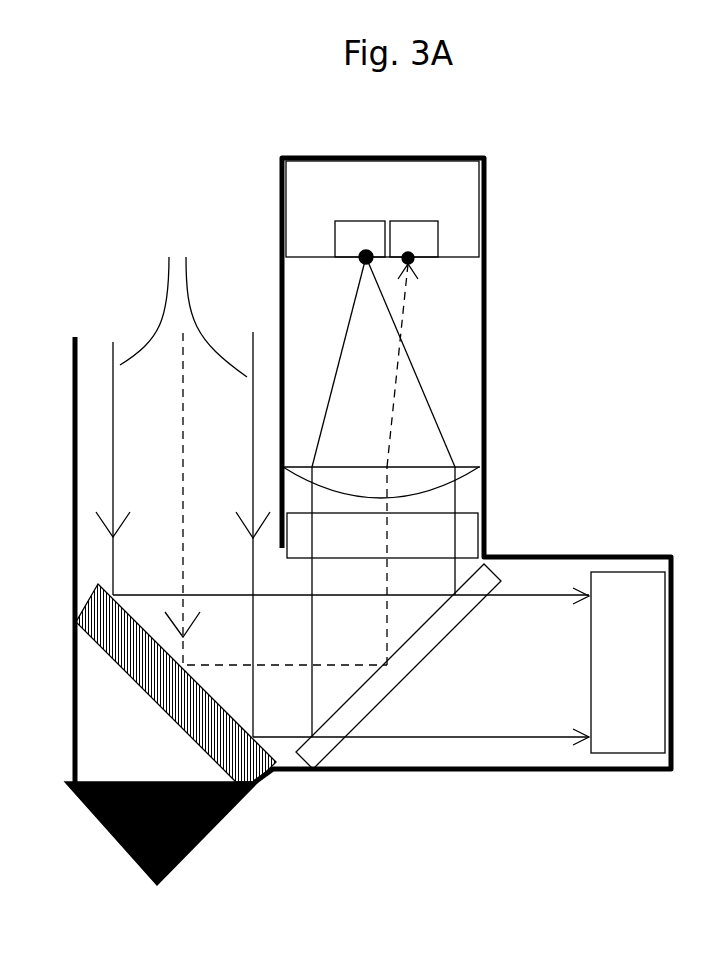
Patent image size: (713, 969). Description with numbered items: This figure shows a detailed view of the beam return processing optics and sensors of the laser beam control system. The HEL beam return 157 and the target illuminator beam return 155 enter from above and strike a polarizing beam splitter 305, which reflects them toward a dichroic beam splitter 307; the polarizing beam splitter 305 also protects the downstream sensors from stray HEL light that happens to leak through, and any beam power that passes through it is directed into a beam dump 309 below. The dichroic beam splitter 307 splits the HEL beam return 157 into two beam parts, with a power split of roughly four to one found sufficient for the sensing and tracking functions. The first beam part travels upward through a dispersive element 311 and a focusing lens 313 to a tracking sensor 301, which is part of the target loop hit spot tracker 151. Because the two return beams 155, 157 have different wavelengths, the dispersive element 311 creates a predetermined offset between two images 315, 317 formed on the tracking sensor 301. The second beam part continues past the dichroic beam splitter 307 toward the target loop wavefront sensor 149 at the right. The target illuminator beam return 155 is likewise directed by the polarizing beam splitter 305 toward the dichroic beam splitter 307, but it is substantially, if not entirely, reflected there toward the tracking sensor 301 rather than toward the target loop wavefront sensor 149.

The target loop wavefront sensor 149 is at (642, 730).
The target loop hit spot tracker 151 is at (457, 175).
The target illuminator beam return 155 is at (185, 369).
The HEL beam return 157 is at (183, 478).
The tracking sensor 301 is at (423, 238).
The polarizing beam splitter 305 is at (100, 624).
The dichroic beam splitter 307 is at (425, 655).
The beam dump 309 is at (153, 780).
The dispersive element 311 is at (465, 540).
The focusing lens 313 is at (465, 473).
The image 315 is at (362, 265).
The image 317 is at (411, 266).